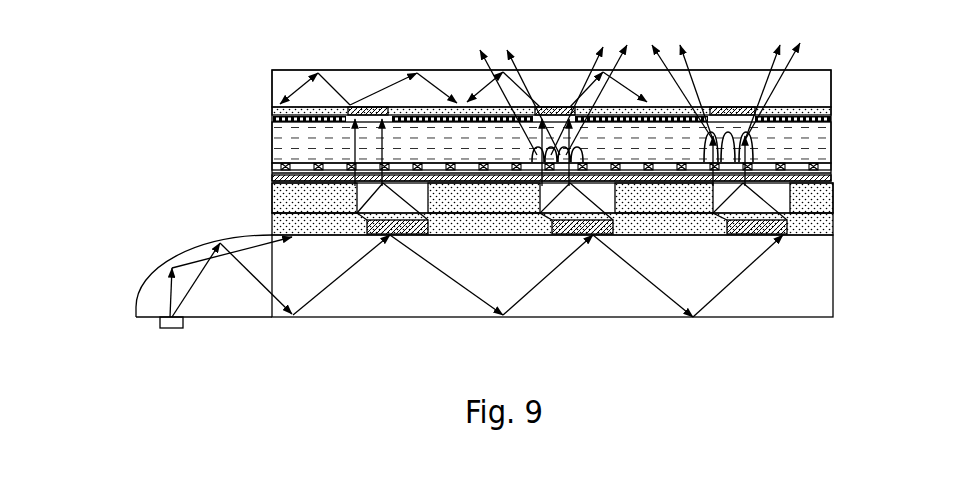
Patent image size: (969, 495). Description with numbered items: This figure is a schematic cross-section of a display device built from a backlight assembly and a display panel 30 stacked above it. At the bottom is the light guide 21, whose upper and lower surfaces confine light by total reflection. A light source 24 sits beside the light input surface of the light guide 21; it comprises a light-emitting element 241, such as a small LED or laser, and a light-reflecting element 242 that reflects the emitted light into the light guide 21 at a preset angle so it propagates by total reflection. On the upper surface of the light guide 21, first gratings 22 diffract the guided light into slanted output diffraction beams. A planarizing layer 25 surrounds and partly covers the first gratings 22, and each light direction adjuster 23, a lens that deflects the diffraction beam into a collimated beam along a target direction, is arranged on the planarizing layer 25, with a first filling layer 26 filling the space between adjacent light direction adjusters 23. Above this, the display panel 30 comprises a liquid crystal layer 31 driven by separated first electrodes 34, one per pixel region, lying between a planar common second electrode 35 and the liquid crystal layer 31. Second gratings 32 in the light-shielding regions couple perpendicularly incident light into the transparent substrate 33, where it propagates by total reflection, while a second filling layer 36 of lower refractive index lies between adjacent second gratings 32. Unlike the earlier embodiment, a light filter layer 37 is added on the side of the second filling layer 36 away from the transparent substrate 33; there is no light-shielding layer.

The light guide 21 is at (833, 303).
The first grating 22 is at (790, 225).
The light direction adjuster 23 is at (790, 206).
The light source 24 is at (179, 311).
The light-emitting element 241 is at (214, 303).
The light-reflecting element 242 is at (140, 293).
The planarizing layer 25 is at (282, 222).
The first filling layer 26 is at (280, 193).
The display panel 30 is at (272, 67).
The liquid crystal layer 31 is at (832, 148).
The second grating 32 is at (740, 107).
The transparent substrate 33 is at (833, 78).
The first electrode 34 is at (827, 167).
The second electrode 35 is at (830, 178).
The second filling layer 36 is at (832, 108).
The light filter layer 37 is at (830, 120).